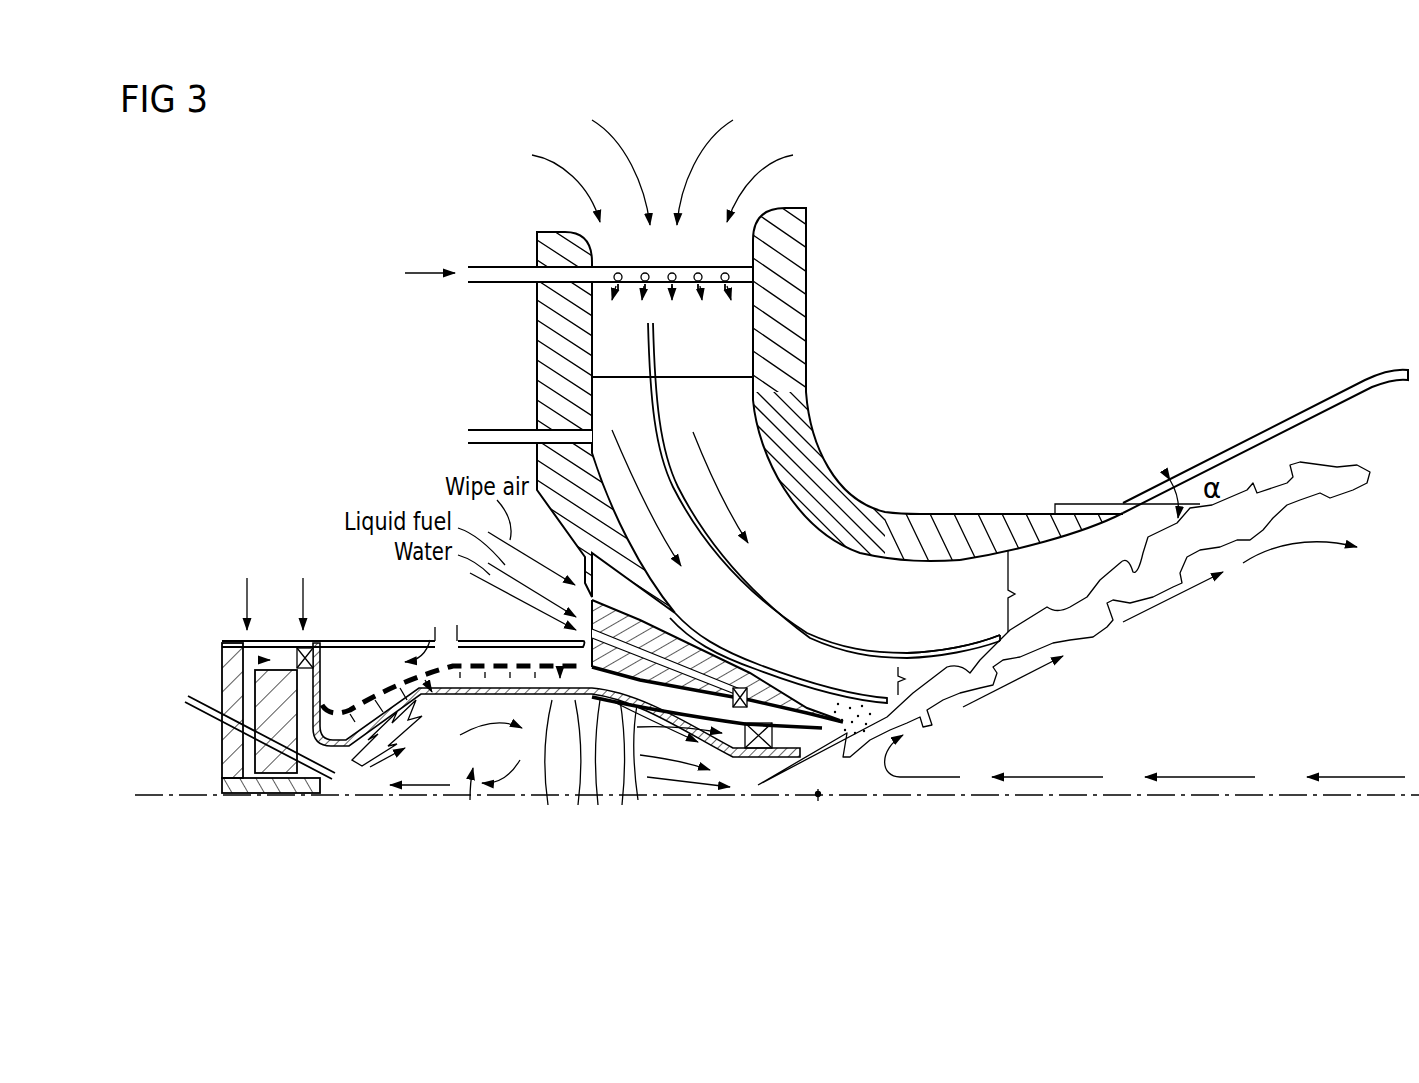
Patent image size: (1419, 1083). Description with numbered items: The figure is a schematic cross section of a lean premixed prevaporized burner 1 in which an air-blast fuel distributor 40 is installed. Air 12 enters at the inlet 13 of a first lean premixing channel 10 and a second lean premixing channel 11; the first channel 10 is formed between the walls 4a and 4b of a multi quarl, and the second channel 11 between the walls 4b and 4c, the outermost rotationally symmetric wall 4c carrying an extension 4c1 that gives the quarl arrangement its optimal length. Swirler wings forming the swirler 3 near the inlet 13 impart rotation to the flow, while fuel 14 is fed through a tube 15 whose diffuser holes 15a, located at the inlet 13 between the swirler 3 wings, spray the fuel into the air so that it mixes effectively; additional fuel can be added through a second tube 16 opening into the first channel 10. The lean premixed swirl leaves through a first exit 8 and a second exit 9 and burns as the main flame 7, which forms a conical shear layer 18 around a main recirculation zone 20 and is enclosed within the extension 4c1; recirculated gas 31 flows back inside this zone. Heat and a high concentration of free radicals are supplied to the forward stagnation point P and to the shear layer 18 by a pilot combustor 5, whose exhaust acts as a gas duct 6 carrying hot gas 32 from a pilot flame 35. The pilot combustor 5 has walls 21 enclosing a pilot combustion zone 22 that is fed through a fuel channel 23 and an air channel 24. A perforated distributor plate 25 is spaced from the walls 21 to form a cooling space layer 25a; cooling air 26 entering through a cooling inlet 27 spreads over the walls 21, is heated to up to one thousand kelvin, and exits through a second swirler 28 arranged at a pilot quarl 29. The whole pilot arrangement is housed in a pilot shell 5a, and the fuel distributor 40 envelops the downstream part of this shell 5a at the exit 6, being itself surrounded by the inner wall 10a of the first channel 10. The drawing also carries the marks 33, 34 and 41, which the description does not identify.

The burner 1 is at (1102, 192).
The swirler 3 is at (600, 330).
The wall of multi quarl 4a is at (857, 652).
The wall of multi quarl 4b is at (893, 648).
The outermost rotational symmetric wall 4c is at (948, 515).
The extension 4c1 is at (1237, 447).
The pilot combustor 5 is at (553, 700).
The pilot shell 5a is at (590, 700).
The gas duct 6 is at (752, 775).
The main flame 7 is at (1352, 456).
The first exit 8 is at (910, 678).
The second exit 9 is at (1023, 591).
The first lean premixing channel 10 is at (605, 405).
The inner wall of first lean premixing channel 10a is at (730, 647).
The second lean premixing channel 11 is at (742, 431).
The air 12 is at (552, 160).
The inlet 13 is at (742, 258).
The fuel 14 is at (422, 238).
The tube 15 is at (468, 270).
The diffuser holes 15a is at (686, 283).
The second tube 16 is at (480, 430).
The shear layer 18 is at (1312, 510).
The main recirculation zone 20 is at (1274, 680).
The walls of pilot combustor 21 is at (600, 760).
The pilot combustion zone 22 is at (470, 795).
The fuel channel 23 is at (248, 685).
The air channel 24 is at (300, 682).
The distributor plate 25 is at (500, 668).
The cooling space layer 25a is at (372, 672).
The cooling air 26 is at (470, 660).
The cooling inlet 27 is at (426, 632).
The second swirler 28 is at (842, 752).
The pilot quarl 29 is at (776, 765).
The recirculated gas 31 is at (1058, 777).
The hot gas 32 is at (678, 790).
The flow 33 is at (712, 830).
The rod 34 is at (200, 720).
The pilot flame 35 is at (362, 765).
The fuel distributor 40 is at (688, 643).
The nozzle 41 is at (745, 698).
The forward stagnation point P is at (829, 829).